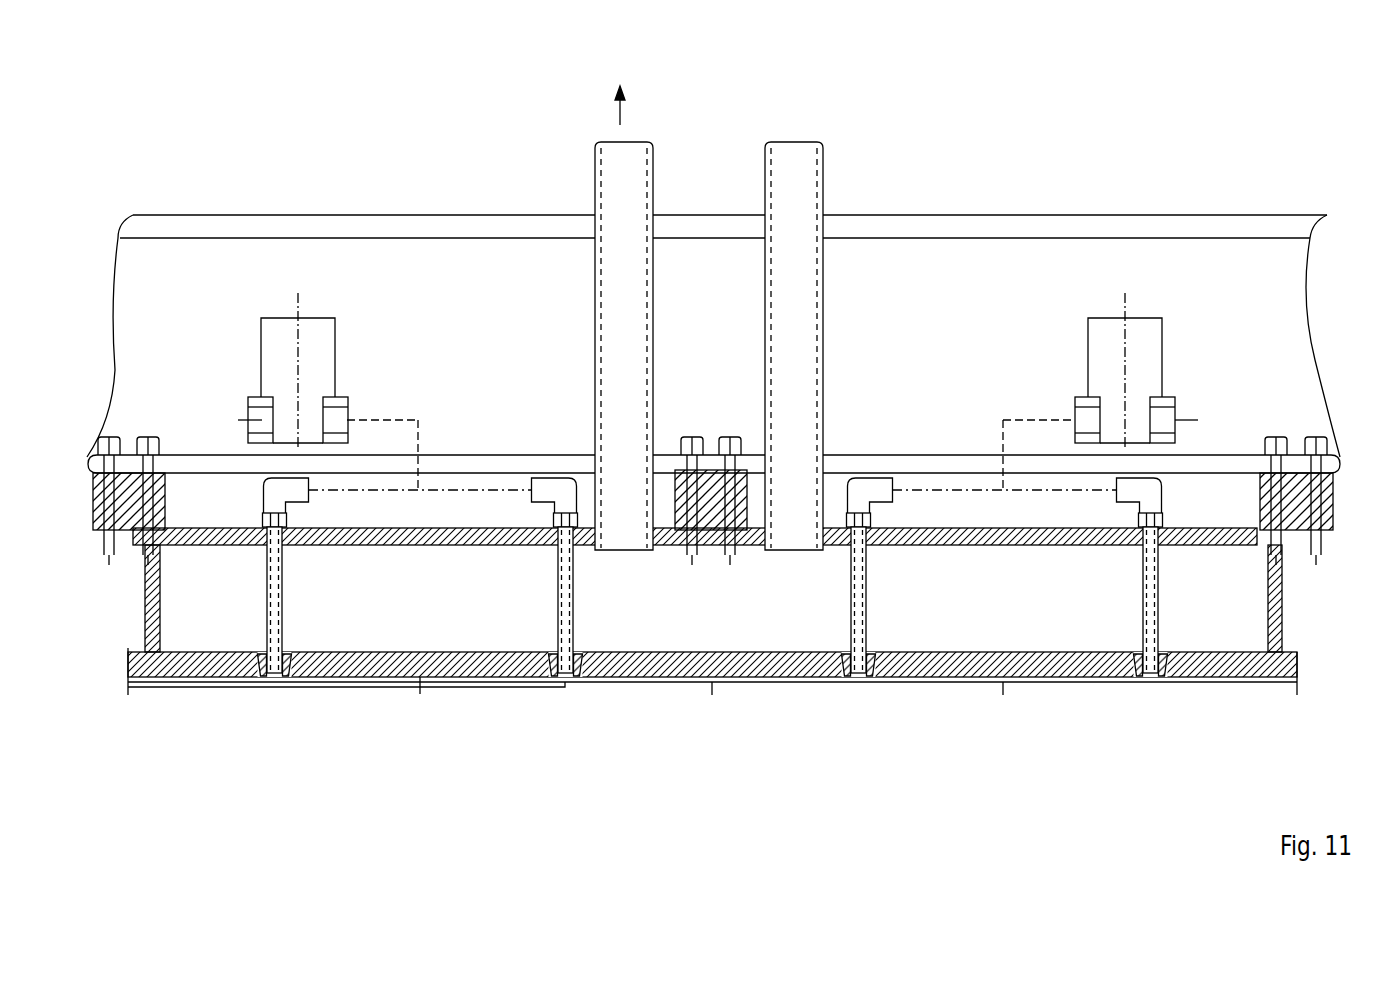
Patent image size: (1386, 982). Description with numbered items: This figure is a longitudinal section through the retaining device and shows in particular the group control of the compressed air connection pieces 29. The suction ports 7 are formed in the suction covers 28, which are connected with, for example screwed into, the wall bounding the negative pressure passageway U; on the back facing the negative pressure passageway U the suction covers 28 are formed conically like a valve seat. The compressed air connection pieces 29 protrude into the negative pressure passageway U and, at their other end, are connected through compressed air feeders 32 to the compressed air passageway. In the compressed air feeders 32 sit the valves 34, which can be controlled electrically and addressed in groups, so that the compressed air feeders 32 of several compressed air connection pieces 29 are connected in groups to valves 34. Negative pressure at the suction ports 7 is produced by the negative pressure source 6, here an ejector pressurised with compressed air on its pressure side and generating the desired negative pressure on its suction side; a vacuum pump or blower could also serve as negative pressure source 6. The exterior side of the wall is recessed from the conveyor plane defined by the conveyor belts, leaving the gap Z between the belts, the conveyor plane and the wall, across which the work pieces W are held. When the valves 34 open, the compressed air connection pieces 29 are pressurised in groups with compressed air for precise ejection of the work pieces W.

The negative pressure source 6 is at (635, 105).
The valve 34 is at (1080, 415).
The compressed air feeder 32 is at (850, 492).
The compressed air connection piece 29 is at (853, 608).
The suction cover 28 is at (585, 682).
The suction port 7 is at (867, 682).
The negative pressure passageway U is at (963, 628).
The work piece W is at (497, 687).
The gap Z is at (292, 687).